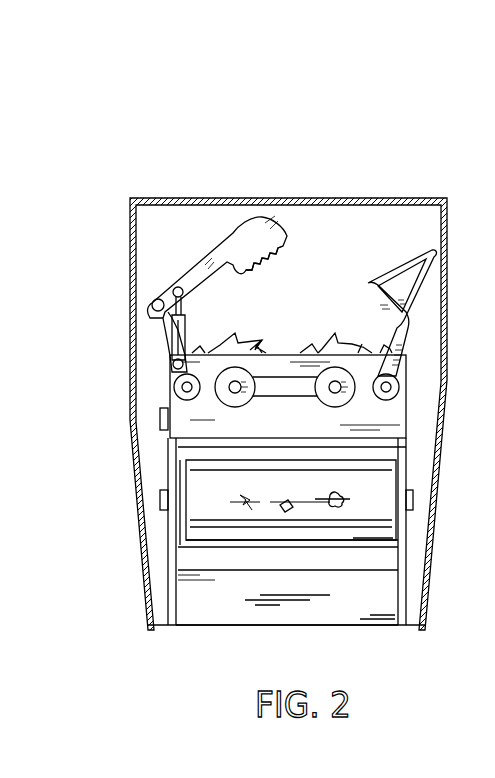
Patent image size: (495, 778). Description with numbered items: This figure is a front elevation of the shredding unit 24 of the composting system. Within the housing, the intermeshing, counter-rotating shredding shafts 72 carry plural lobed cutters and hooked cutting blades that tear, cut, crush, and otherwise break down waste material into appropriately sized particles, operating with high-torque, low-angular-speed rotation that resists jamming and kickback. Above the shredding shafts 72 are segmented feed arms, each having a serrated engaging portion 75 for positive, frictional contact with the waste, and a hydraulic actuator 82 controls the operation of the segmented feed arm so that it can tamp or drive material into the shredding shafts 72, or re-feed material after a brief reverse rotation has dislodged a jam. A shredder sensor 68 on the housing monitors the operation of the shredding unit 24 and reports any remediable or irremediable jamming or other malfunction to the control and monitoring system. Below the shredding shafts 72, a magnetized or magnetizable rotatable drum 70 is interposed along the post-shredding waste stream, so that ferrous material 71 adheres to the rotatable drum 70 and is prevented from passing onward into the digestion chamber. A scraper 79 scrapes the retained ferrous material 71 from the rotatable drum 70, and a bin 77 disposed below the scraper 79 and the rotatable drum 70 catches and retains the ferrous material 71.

The shredding unit 24 is at (290, 128).
The shredder sensor 68 is at (160, 419).
The rotatable drum 70 is at (193, 465).
The ferrous material 71 is at (330, 496).
The shredding shafts 72 is at (227, 332).
The serrated engaging portion 75 is at (278, 258).
The bin 77 is at (197, 612).
The scraper 79 is at (202, 543).
The hydraulic actuator 82 is at (187, 329).